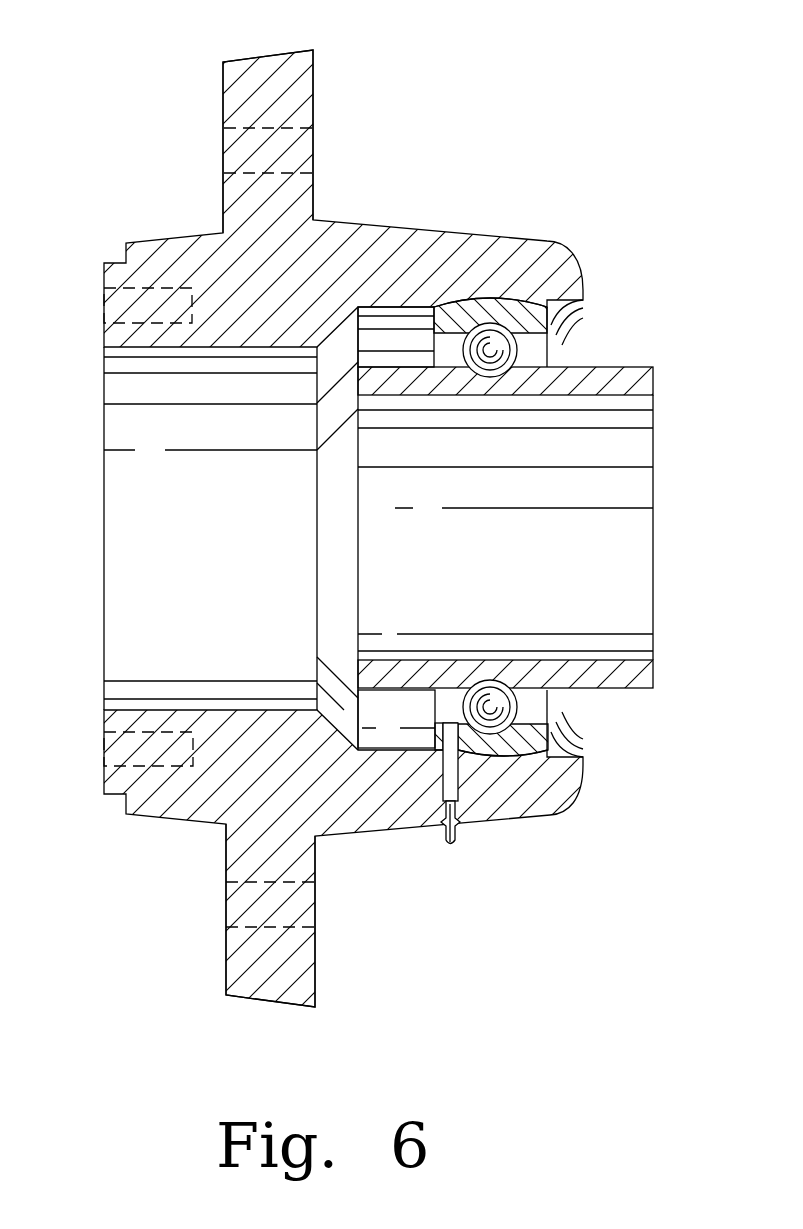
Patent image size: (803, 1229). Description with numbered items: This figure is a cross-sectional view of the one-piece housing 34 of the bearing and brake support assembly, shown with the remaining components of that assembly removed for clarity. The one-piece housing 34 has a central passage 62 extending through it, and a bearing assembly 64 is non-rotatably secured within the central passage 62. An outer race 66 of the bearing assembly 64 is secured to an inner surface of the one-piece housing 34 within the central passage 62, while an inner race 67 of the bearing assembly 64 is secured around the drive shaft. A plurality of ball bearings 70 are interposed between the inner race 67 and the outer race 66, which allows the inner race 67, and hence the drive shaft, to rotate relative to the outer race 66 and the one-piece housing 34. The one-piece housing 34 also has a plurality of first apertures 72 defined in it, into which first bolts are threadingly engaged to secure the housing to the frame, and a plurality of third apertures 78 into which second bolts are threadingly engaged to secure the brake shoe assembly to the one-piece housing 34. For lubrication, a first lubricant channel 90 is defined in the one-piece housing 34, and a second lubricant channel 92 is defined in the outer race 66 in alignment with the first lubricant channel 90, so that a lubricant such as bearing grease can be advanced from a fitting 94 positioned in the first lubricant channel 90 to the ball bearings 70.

The one-piece housing 34 is at (370, 531).
The central passage 62 is at (130, 698).
The bearing assembly 64 is at (550, 328).
The outer race 66 is at (497, 750).
The inner race 67 is at (637, 375).
The ball bearings 70 is at (500, 347).
The first apertures 72 is at (313, 152).
The third apertures 78 is at (103, 312).
The first lubricant channel 90 is at (449, 778).
The second lubricant channel 92 is at (449, 728).
The fitting 94 is at (450, 845).